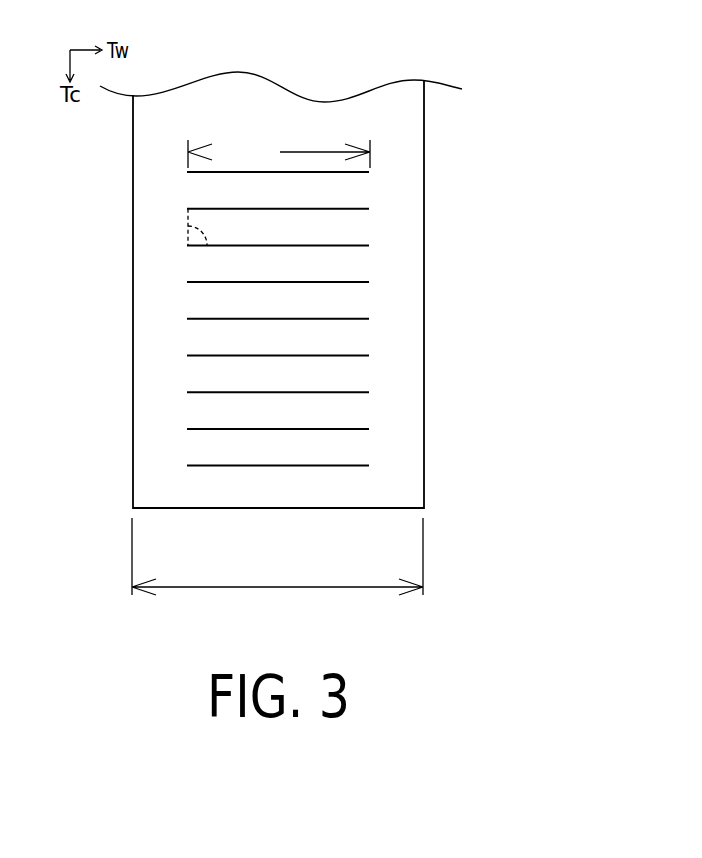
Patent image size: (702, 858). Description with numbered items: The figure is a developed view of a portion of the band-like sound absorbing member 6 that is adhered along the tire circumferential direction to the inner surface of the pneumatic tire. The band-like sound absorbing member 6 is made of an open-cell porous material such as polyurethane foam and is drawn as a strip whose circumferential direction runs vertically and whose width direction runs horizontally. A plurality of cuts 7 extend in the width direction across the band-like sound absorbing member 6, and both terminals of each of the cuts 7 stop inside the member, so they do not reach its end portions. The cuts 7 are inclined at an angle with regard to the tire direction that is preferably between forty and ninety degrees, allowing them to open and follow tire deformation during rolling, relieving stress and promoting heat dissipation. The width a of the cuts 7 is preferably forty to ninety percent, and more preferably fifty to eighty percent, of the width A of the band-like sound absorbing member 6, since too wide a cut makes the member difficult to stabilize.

The band-like sound absorbing member 6 is at (392, 265).
The cuts 7 is at (207, 318).
The width of the cuts a is at (282, 152).
The width of the band-like sound absorbing member A is at (277, 556).